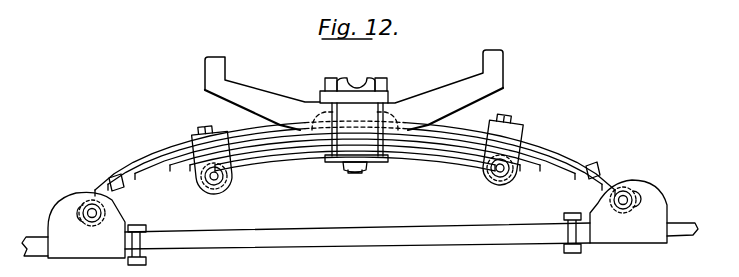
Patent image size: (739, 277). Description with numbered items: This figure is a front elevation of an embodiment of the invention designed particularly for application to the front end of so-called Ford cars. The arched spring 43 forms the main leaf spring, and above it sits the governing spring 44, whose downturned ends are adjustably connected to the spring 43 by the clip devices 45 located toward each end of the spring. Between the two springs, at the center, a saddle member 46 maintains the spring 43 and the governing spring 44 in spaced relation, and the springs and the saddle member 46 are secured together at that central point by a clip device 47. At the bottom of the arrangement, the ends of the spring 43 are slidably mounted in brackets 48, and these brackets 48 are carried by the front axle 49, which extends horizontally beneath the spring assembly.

The spring 43 is at (272, 160).
The governing spring 44 is at (475, 118).
The clip devices 45 is at (200, 142).
The saddle member 46 is at (428, 155).
The clip device 47 is at (334, 165).
The brackets 48 is at (118, 213).
The front axle 49 is at (354, 241).